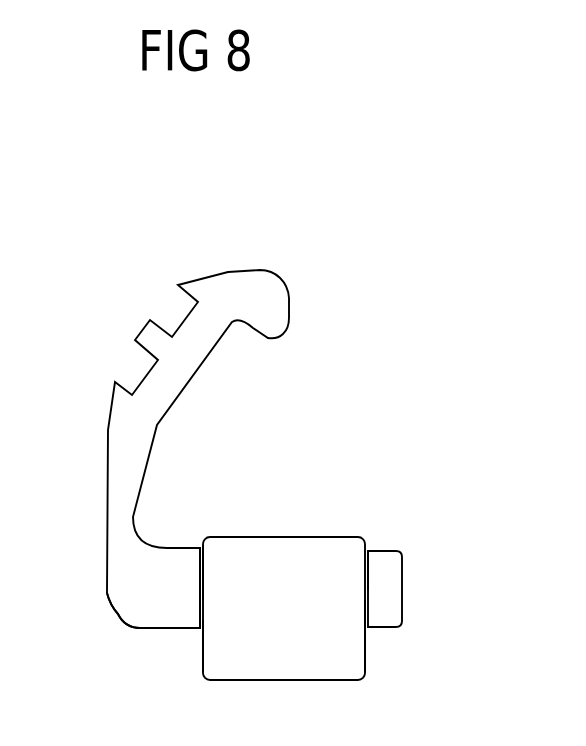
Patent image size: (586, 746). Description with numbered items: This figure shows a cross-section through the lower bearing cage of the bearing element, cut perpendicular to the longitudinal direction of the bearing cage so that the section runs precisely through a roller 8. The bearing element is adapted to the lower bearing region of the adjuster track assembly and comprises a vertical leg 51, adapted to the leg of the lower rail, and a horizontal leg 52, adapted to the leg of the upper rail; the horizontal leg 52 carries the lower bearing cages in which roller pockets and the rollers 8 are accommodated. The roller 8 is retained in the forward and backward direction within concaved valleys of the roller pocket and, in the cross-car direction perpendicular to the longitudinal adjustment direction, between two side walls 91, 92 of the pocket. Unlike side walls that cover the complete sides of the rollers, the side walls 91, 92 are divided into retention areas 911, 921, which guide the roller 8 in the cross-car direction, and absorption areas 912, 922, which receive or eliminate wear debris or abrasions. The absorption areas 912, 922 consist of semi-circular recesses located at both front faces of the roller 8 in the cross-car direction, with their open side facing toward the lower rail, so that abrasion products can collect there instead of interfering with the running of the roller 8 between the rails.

The roller 8 is at (282, 560).
The vertical leg 51 is at (122, 418).
The horizontal leg 52 is at (133, 608).
The side wall 91 is at (178, 592).
The retention area 911 is at (200, 573).
The absorption area 912 is at (195, 648).
The side wall 92 is at (426, 585).
The retention area 921 is at (367, 580).
The absorption area 922 is at (370, 645).